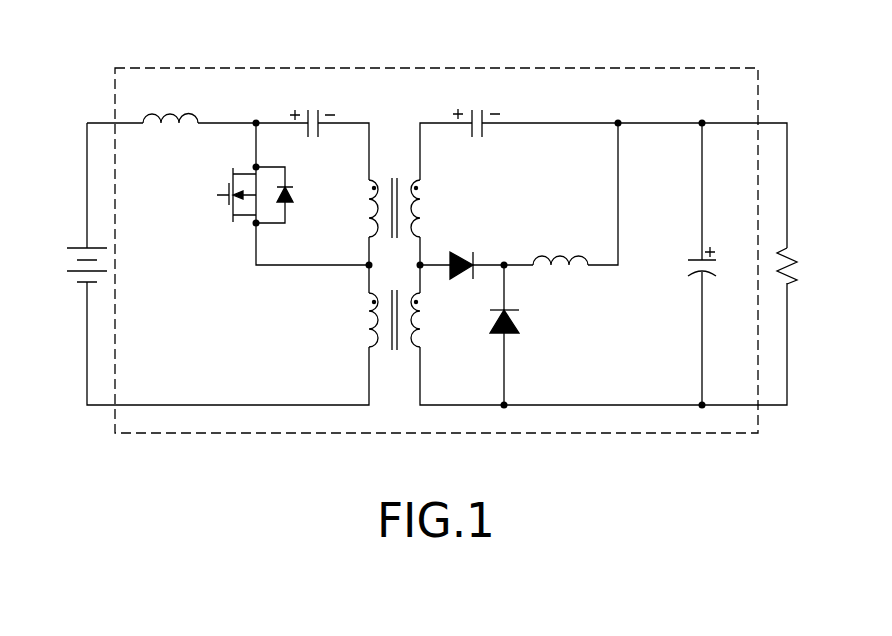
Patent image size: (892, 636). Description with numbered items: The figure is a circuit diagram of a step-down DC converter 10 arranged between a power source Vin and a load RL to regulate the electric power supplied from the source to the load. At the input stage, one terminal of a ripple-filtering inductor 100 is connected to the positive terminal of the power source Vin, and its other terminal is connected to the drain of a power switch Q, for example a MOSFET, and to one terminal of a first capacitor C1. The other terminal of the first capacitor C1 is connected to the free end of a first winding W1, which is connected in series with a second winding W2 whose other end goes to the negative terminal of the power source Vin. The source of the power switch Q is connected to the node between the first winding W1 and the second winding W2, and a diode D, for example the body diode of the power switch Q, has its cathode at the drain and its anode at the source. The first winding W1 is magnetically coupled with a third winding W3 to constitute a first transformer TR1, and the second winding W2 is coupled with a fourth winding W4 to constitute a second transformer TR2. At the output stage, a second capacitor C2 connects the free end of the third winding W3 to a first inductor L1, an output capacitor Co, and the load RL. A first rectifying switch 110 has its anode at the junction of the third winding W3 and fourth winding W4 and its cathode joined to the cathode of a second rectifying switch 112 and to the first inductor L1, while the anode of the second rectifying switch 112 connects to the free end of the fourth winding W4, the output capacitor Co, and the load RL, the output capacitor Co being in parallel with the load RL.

The step-down DC converter 10 is at (437, 73).
The ripple-filtering inductor 100 is at (170, 116).
The first rectifying switch 110 is at (463, 253).
The second rectifying switch 112 is at (517, 320).
The power source Vin is at (64, 265).
The first capacitor C1 is at (312, 111).
The second capacitor C2 is at (476, 111).
The power switch Q is at (224, 195).
The diode D is at (284, 195).
The first transformer TR1 is at (393, 193).
The second transformer TR2 is at (395, 336).
The first winding W1 is at (372, 203).
The second winding W2 is at (375, 329).
The third winding W3 is at (418, 200).
The fourth winding W4 is at (416, 329).
The first inductor L1 is at (560, 248).
The output capacitor Co is at (684, 263).
The load RL is at (804, 266).